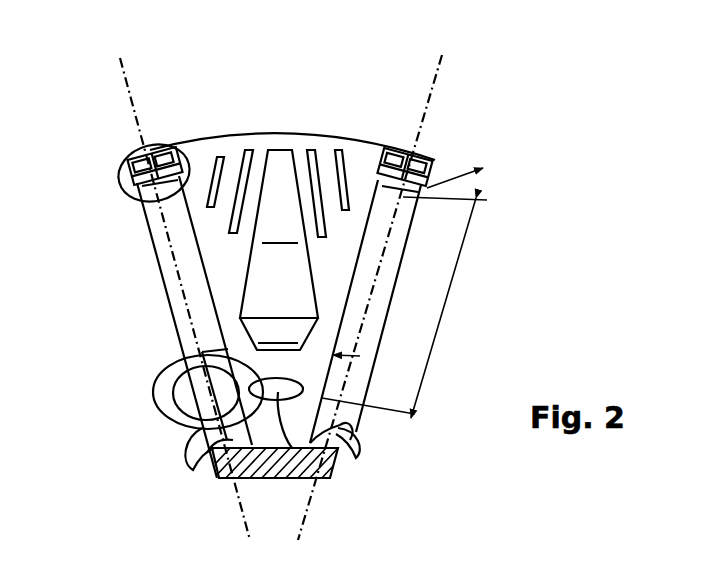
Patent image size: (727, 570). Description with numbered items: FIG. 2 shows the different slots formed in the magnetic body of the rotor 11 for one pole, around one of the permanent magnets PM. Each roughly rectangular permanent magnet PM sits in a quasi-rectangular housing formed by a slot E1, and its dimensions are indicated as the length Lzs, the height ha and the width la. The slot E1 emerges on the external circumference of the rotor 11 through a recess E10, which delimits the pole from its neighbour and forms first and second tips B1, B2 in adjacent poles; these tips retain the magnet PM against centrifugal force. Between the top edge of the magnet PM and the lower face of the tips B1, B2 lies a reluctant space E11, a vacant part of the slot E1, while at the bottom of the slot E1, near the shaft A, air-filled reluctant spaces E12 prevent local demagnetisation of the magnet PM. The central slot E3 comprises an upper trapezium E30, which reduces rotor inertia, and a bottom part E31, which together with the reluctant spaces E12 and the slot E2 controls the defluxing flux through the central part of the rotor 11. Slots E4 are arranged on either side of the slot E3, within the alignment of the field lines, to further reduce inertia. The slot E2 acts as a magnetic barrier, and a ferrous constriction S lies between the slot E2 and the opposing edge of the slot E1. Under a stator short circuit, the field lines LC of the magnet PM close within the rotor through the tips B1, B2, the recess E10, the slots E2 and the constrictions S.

The rotor 11 is at (278, 62).
The slot E1 is at (377, 183).
The permanent magnet PM is at (190, 285).
The second tip B2 is at (133, 155).
The first tip B1 is at (163, 147).
The recess E10 is at (142, 152).
The reluctant space E11 is at (167, 157).
The field lines LC is at (120, 197).
The slot E3 is at (280, 162).
The upper trapezium E30 is at (280, 233).
The bottom part E31 is at (279, 334).
The slot E4 is at (262, 163).
The ferrous constriction S is at (255, 367).
The slot E2 is at (312, 478).
The reluctant space E12 is at (273, 459).
The shaft A is at (275, 468).
The height of the permanent magnet ha is at (404, 307).
The width of the permanent magnet la is at (360, 356).
The length of the permanent magnet Lzs is at (460, 195).